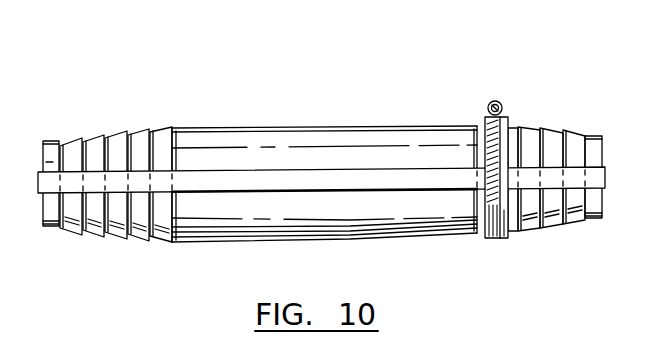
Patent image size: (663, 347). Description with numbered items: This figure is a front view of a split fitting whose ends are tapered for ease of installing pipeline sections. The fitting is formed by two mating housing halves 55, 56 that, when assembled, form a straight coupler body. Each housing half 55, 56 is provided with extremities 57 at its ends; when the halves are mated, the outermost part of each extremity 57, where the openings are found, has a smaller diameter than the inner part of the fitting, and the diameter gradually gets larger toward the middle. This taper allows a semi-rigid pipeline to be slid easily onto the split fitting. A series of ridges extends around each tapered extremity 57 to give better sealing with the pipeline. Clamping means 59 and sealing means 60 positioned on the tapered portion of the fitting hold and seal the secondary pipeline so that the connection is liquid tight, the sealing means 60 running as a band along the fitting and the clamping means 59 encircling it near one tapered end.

The housing half 55 is at (324, 187).
The housing half 56 is at (324, 111).
The extremities 57 is at (107, 189).
The clamping means 59 is at (525, 156).
The sealing means 60 is at (321, 170).